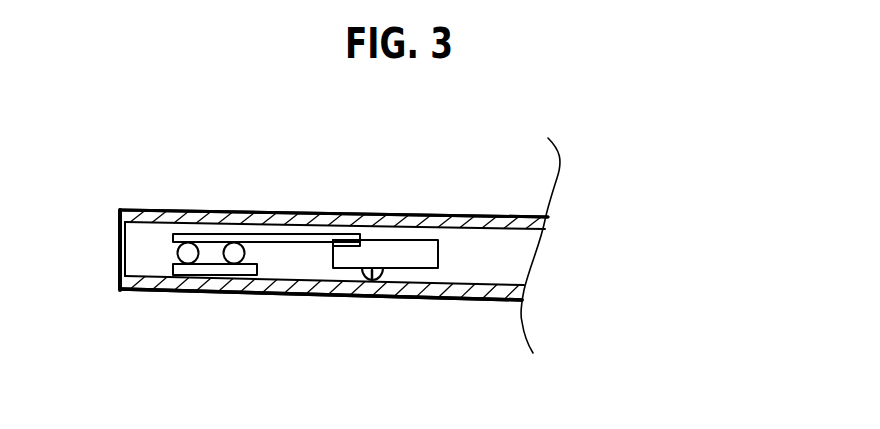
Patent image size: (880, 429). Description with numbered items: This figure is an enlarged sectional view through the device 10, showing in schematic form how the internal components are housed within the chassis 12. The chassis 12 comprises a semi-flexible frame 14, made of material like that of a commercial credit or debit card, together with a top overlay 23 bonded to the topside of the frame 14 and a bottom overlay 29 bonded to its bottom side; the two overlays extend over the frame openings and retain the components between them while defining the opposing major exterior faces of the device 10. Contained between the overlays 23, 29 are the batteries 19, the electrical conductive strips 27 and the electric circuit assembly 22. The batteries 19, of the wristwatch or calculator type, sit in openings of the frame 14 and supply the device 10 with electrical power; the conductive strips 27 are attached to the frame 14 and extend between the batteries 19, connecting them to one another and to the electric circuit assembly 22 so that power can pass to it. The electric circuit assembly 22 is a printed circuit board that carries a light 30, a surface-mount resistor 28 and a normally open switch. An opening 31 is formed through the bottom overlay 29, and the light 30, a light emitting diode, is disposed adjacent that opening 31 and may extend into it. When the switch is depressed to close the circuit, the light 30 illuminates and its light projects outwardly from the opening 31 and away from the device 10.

The device 10 is at (493, 113).
The chassis 12 is at (213, 210).
The frame 14 is at (121, 245).
The batteries 19 is at (193, 297).
The electric circuit assembly 22 is at (423, 248).
The top cover or overlay 23 is at (125, 209).
The electrical conductive strips 27 is at (263, 234).
The surface-mount resistor 28 is at (342, 235).
The bottom overlay 29 is at (133, 293).
The light 30 is at (377, 281).
The opening 31 is at (371, 281).